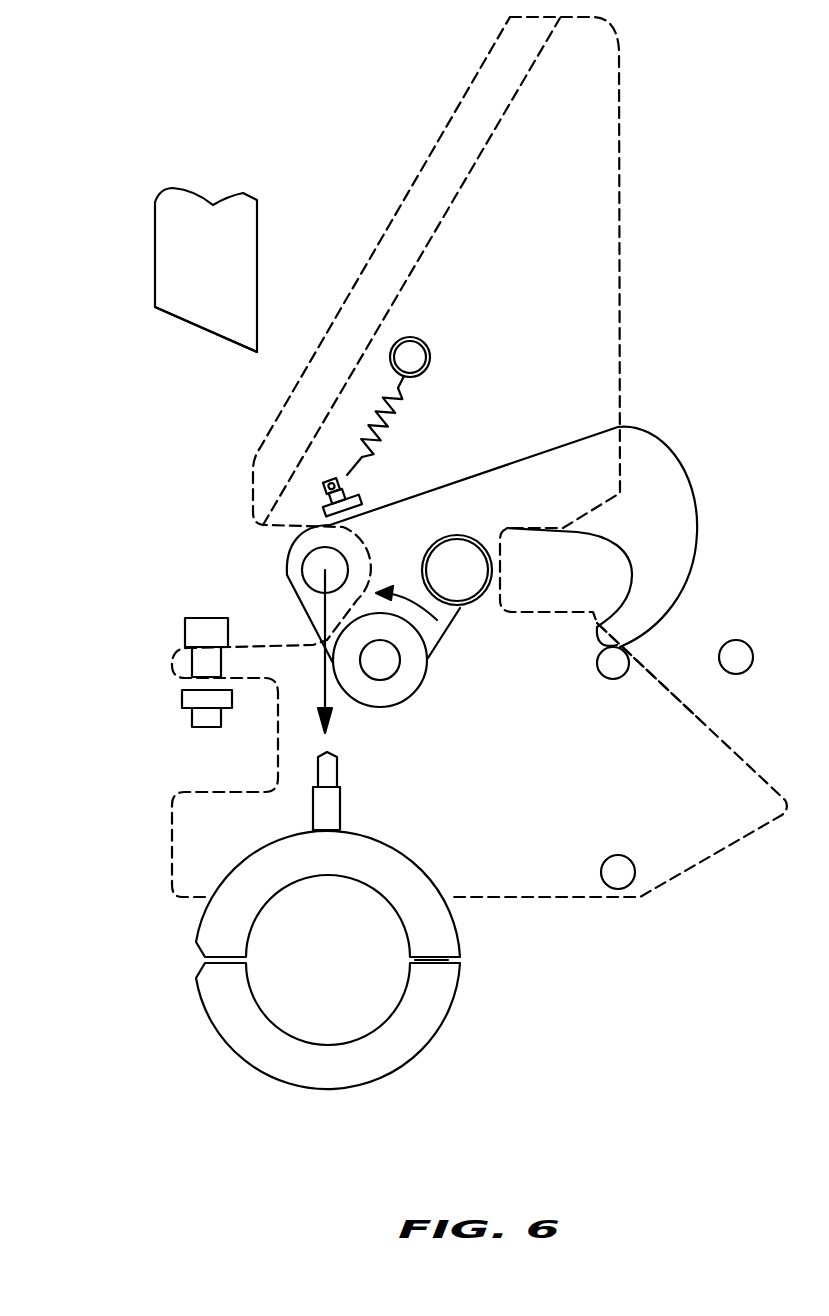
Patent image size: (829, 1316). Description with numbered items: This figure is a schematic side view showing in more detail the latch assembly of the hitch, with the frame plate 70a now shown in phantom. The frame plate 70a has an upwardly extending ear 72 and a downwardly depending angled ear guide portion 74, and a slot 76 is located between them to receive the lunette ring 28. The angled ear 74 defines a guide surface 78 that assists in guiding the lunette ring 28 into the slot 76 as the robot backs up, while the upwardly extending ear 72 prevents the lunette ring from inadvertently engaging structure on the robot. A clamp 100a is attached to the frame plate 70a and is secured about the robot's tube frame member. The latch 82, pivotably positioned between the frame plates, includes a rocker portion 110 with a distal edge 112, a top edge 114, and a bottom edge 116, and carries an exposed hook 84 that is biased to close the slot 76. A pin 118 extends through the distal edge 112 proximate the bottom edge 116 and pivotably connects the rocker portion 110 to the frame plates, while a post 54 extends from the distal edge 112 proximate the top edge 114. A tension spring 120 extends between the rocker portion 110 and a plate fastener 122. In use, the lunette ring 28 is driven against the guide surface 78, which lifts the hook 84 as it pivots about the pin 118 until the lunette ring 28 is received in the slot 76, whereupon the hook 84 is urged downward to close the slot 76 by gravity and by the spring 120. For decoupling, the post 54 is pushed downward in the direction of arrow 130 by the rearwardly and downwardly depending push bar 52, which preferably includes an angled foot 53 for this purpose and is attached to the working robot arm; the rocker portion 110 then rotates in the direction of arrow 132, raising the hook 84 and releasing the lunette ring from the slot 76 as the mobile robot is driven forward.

The lunette ring 28 is at (738, 652).
The push bar 52 is at (185, 233).
The angled foot 53 is at (187, 327).
The post 54 is at (325, 570).
The frame plate 70a is at (620, 55).
The upwardly extending ear 72 is at (413, 271).
The angled ear guide portion 74 is at (644, 831).
The slot 76 is at (542, 559).
The guide surface 78 is at (723, 738).
The latch 82 is at (643, 447).
The hook 84 is at (637, 583).
The clamp 100a is at (215, 1035).
The rocker portion 110 is at (395, 568).
The distal edge 112 is at (297, 607).
The top edge 114 is at (538, 455).
The bottom edge 116 is at (450, 608).
The pin 118 is at (380, 660).
The tension spring 120 is at (388, 415).
The plate fastener 122 is at (407, 347).
The arrow 130 is at (327, 693).
The arrow 132 is at (408, 590).